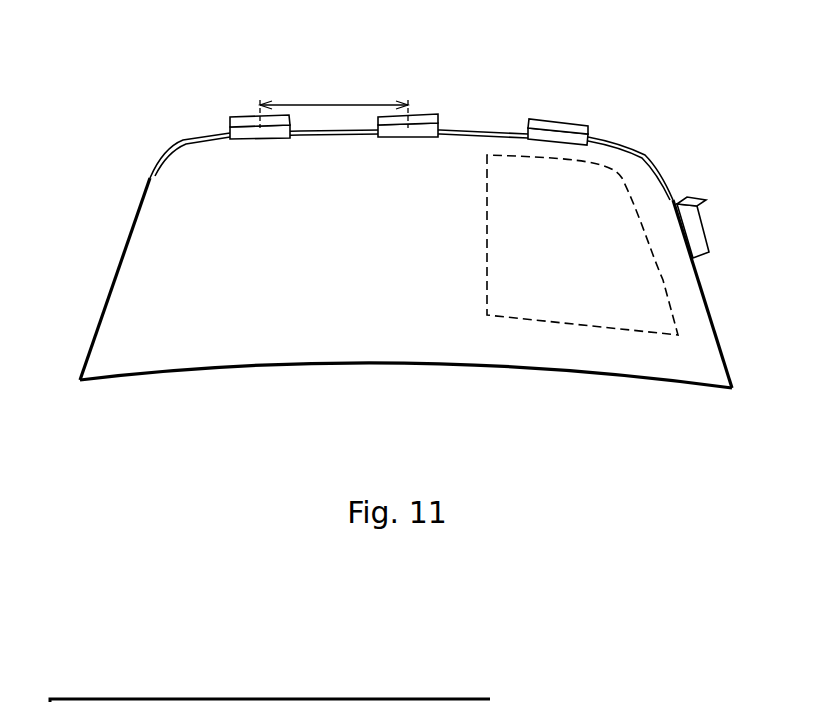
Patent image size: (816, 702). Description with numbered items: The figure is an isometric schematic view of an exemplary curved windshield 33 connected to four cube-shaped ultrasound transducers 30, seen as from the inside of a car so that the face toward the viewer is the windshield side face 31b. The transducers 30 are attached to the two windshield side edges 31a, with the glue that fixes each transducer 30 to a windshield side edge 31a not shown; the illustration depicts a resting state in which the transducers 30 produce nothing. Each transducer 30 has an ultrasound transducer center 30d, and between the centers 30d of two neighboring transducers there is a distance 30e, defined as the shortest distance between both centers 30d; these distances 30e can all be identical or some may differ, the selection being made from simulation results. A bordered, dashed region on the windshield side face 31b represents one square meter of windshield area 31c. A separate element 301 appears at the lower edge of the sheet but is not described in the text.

The cube-shaped ultrasound transducer 30 is at (233, 122).
The ultrasound transducer center 30d is at (257, 128).
The distance 30e is at (334, 104).
The windshield side edge 31a is at (207, 134).
The windshield side face 31b is at (213, 227).
The windshield area 31c is at (567, 253).
The curved windshield 33 is at (497, 105).
The frame member 301 is at (705, 701).